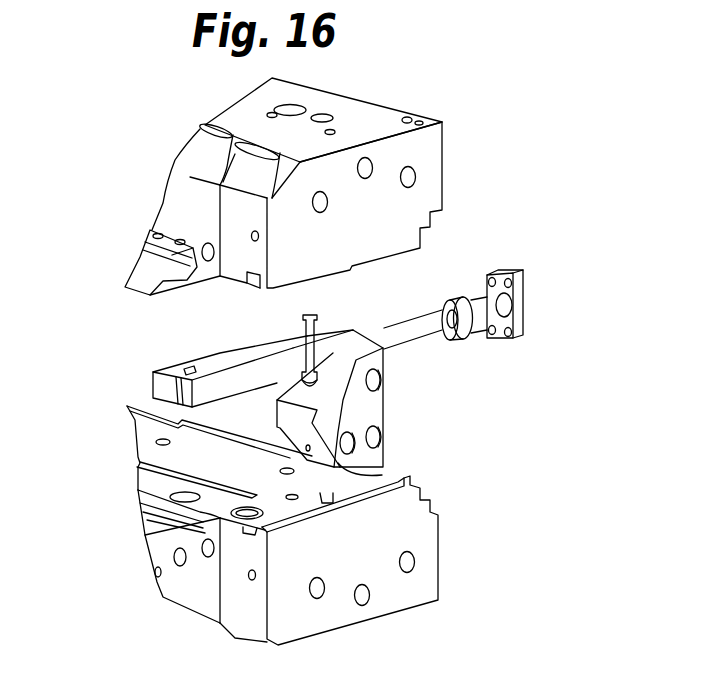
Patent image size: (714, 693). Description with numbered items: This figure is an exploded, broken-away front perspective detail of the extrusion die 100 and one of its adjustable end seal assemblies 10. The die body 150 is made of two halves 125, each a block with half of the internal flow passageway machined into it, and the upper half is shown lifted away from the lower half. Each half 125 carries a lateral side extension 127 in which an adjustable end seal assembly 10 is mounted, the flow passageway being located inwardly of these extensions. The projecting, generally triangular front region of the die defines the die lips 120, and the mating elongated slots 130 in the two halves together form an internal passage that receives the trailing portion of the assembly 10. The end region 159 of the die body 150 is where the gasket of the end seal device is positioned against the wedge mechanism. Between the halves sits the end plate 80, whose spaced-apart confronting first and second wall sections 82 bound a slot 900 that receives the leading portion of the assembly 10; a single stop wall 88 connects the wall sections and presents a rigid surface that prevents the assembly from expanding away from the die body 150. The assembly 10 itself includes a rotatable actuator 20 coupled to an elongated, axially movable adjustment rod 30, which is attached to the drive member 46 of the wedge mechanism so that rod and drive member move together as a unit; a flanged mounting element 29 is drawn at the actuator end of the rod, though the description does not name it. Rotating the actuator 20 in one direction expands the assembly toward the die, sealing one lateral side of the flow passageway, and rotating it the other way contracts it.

The extrusion die 100 is at (377, 94).
The die body 150 is at (432, 160).
The halves of the die body 125 is at (433, 201).
The lateral side extensions 127 is at (203, 225).
The end region of the die body 159 is at (247, 216).
The die lips 120 is at (142, 250).
The elongated slots 130 is at (245, 291).
The adjustable end seal assembly 10 is at (534, 298).
The flange opening 29 is at (497, 312).
The adjustment rod 30 is at (403, 328).
The actuator 20 is at (479, 331).
The end plate 80 is at (363, 407).
The first and second wall sections 82 is at (362, 380).
The stop wall 88 is at (356, 440).
The drive member 46 is at (260, 372).
The slot 900 is at (276, 414).